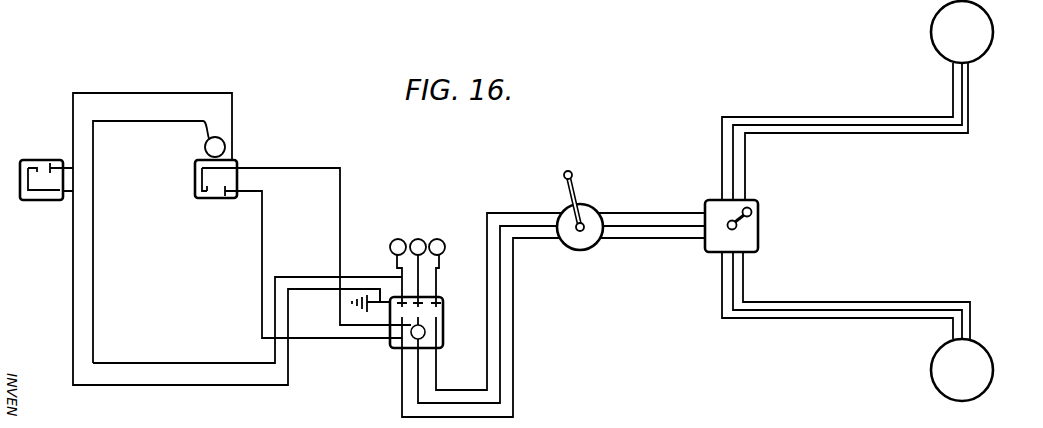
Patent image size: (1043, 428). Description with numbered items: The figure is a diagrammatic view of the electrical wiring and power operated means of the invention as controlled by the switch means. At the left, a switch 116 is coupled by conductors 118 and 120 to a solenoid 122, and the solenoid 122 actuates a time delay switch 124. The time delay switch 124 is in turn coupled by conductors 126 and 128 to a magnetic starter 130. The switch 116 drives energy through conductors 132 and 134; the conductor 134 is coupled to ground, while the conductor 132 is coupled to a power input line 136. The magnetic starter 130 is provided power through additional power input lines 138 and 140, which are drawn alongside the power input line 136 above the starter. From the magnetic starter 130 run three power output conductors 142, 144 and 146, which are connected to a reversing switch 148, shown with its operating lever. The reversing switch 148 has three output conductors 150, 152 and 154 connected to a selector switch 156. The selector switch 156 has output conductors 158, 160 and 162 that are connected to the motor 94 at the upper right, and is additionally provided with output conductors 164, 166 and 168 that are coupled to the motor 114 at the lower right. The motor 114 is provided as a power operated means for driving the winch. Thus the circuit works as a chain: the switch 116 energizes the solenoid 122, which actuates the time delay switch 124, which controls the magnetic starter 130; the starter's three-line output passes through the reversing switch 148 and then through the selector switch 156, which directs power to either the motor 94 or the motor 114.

The motor 94 is at (932, 28).
The motor 114 is at (930, 372).
The switch 116 is at (37, 160).
The conductor 118 is at (145, 93).
The conductor 120 is at (165, 121).
The solenoid 122 is at (223, 140).
The time delay switch 124 is at (217, 199).
The conductor 126 is at (262, 228).
The conductor 128 is at (340, 205).
The magnetic starter 130 is at (397, 348).
The conductor 132 is at (197, 363).
The conductor 134 is at (202, 385).
The power input line 136 is at (393, 262).
The power input line 138 is at (430, 239).
The power input line 140 is at (445, 252).
The power output conductor 142 is at (487, 377).
The power output conductor 144 is at (500, 352).
The power output conductor 146 is at (513, 327).
The reversing switch 148 is at (597, 204).
The output conductor 150 is at (637, 228).
The output conductor 152 is at (682, 240).
The output conductor 154 is at (650, 213).
The selector switch 156 is at (752, 232).
The output conductor 158 is at (862, 133).
The output conductor 160 is at (823, 125).
The output conductor 162 is at (792, 117).
The output conductor 164 is at (768, 300).
The output conductor 166 is at (818, 310).
The output conductor 168 is at (835, 322).